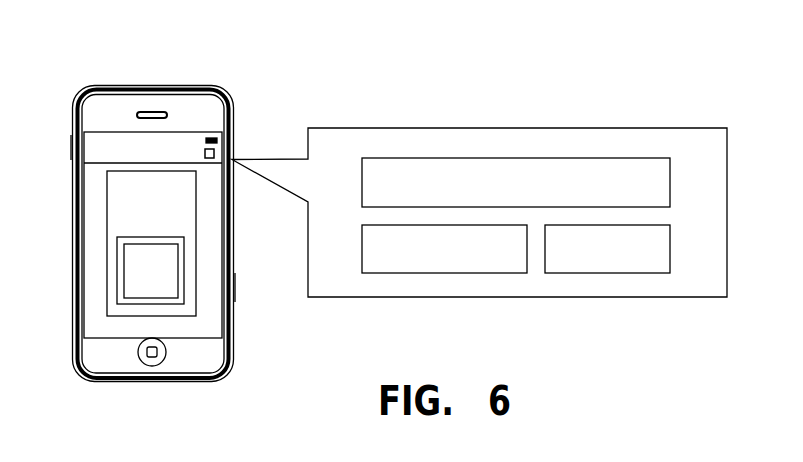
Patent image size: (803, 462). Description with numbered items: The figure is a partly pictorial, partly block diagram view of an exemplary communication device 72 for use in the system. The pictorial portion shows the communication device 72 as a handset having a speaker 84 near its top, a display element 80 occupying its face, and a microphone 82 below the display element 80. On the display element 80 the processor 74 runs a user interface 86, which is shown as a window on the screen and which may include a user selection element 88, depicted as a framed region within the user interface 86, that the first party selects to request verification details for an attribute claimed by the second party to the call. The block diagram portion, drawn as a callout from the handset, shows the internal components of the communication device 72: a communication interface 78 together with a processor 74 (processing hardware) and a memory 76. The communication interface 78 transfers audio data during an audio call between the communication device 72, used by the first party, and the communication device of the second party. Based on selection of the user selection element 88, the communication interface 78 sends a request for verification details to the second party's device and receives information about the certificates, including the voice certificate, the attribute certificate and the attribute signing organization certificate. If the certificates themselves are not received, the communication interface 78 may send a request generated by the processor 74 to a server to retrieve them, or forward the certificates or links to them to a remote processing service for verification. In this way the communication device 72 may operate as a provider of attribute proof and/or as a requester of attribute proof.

The communication device 72 is at (168, 84).
The speaker 84 is at (138, 113).
The display element 80 is at (97, 257).
The user interface 86 is at (107, 207).
The user selection element 88 is at (125, 287).
The microphone 82 is at (152, 358).
The communication interface 78 is at (522, 158).
The processor 74 is at (445, 273).
The memory 76 is at (630, 273).